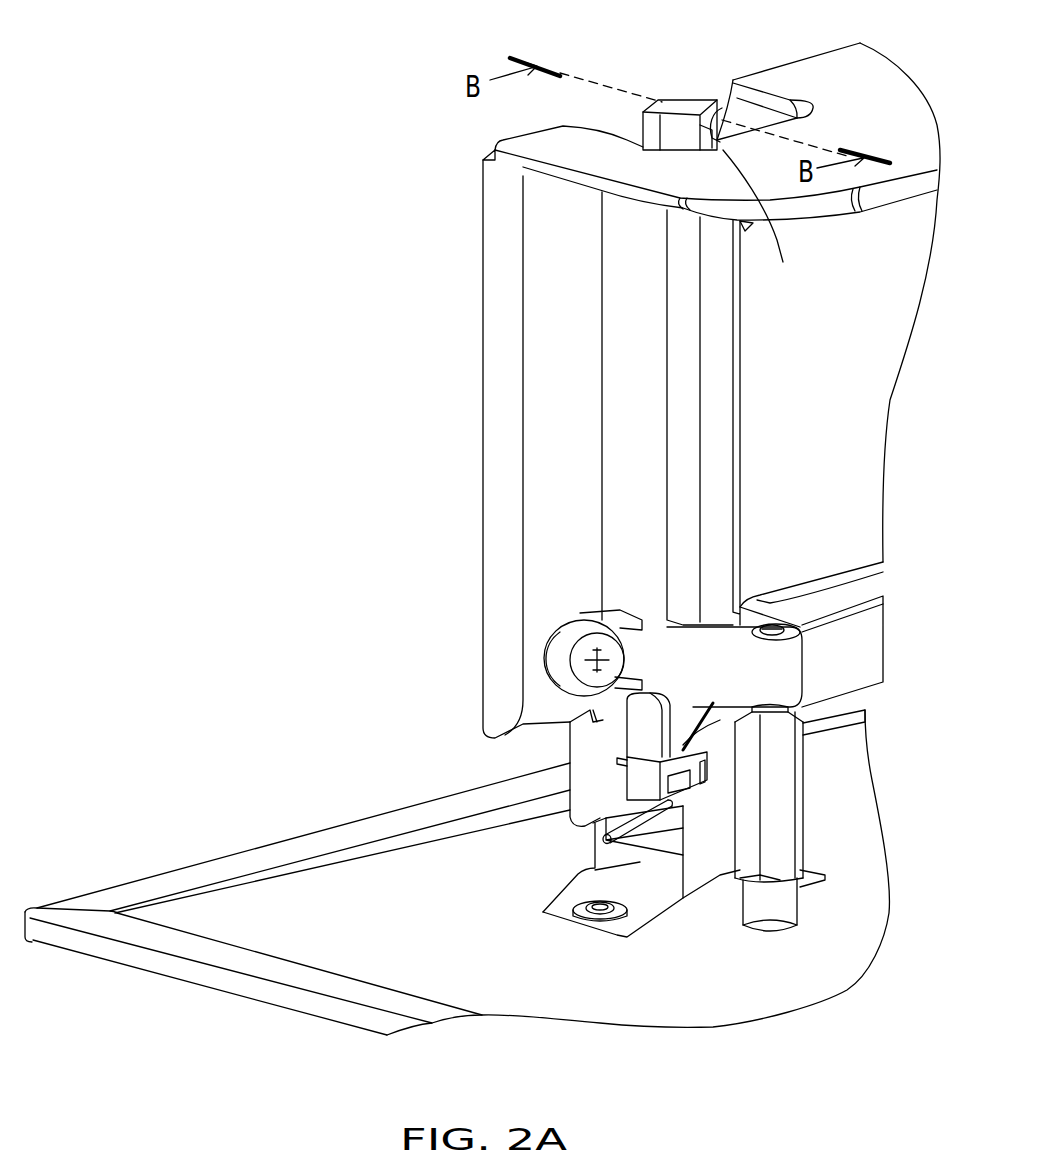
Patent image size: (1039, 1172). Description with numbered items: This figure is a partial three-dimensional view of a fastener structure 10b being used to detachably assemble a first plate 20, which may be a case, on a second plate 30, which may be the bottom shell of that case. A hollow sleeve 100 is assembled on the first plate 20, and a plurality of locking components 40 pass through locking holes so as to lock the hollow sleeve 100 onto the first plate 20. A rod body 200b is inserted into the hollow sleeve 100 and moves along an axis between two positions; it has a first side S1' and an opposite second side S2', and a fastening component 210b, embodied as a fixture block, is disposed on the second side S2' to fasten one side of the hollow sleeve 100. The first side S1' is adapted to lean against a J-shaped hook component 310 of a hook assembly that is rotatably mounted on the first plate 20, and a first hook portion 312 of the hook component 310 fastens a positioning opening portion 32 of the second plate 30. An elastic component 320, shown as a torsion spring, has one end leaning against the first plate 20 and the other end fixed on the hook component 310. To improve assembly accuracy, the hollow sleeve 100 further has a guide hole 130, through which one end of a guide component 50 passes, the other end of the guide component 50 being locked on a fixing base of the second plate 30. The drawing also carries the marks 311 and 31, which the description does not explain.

The first plate 20 is at (814, 66).
The rod body 200b is at (668, 86).
The second side S2' is at (718, 73).
The fastening component 210b is at (767, 222).
The hollow sleeve 100 is at (623, 400).
The fastener structure 10b is at (543, 468).
The locking component 40 is at (587, 653).
The guide hole 130 is at (794, 614).
The first side S1' is at (803, 735).
The pivot post 311 is at (713, 751).
The guide component 50 is at (785, 813).
The positioning opening portion 32 is at (715, 844).
The second plate 30 is at (325, 888).
The hook component 310 is at (640, 785).
The elastic component 320 is at (605, 838).
The bracket 31 is at (605, 876).
The first hook portion 312 is at (747, 880).